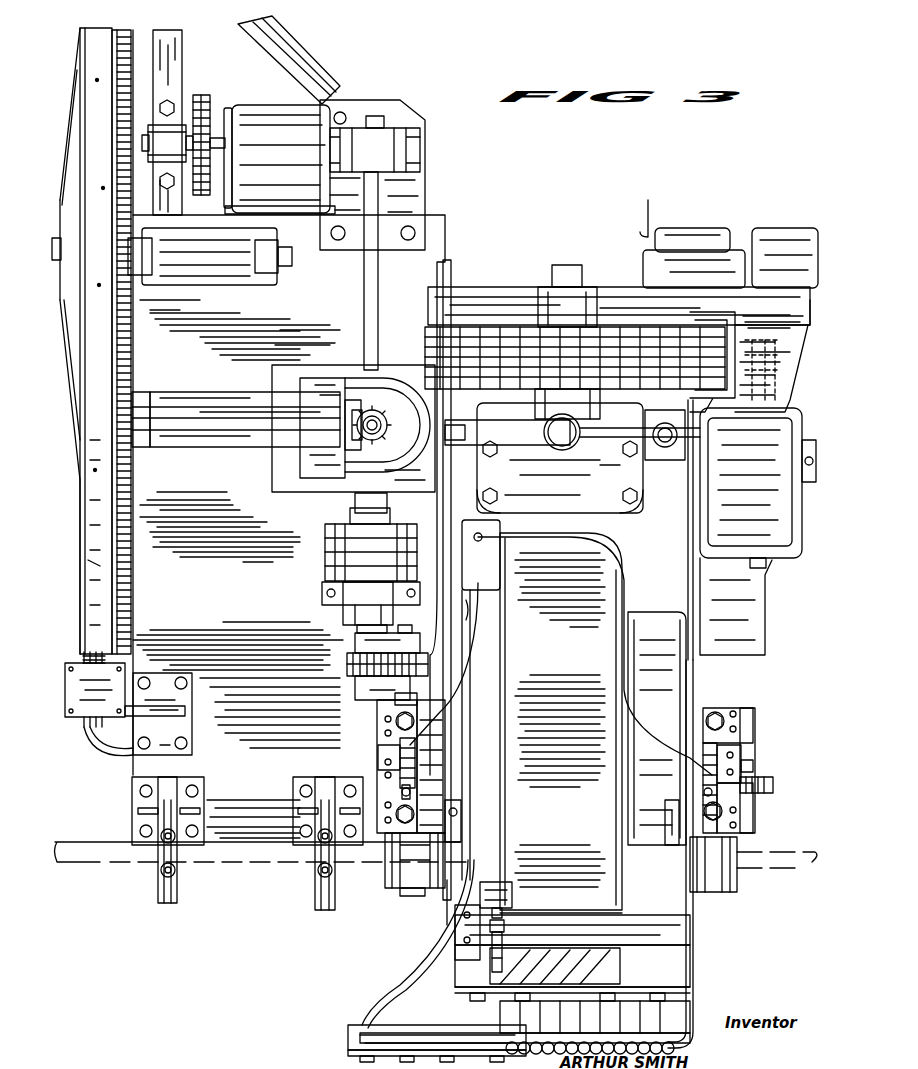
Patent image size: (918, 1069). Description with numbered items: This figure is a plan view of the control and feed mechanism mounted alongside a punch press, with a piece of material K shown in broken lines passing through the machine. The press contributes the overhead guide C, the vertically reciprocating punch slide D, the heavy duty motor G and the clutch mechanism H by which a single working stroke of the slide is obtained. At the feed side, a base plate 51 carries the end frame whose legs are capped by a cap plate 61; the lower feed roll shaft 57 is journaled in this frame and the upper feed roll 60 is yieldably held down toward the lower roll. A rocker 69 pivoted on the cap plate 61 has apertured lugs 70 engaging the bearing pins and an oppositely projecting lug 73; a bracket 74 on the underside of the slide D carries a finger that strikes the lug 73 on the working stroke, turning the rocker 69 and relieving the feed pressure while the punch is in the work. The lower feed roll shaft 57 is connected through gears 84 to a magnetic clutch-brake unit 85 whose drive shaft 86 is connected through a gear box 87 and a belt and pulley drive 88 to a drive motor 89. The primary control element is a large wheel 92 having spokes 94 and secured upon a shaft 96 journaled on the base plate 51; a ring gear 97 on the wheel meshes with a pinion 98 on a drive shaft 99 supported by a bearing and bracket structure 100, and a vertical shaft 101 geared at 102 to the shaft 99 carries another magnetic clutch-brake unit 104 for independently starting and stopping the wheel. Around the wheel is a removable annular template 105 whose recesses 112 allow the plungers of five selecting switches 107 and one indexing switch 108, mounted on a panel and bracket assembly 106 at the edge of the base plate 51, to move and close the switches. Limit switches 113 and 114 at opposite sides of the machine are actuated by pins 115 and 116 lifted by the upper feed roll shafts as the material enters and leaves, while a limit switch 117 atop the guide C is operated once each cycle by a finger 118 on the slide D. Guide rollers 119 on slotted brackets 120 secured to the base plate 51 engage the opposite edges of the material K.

The wheel 92 is at (112, 30).
The spokes 94 is at (68, 392).
The recesses 112 is at (92, 528).
The annular band or strip 105 is at (90, 564).
The selecting switches 107 is at (80, 655).
The indexing switch 108 is at (80, 661).
The supporting panel and bracket assembly 106 is at (68, 700).
The belt and pulley drive 88 is at (207, 100).
The drive motor 89 is at (263, 110).
The gear box 87 is at (386, 136).
The drive shaft 86 is at (364, 308).
The base plate 51 is at (289, 526).
The shaft 96 is at (210, 258).
The ring gear 97 is at (134, 362).
The pinion 98 is at (134, 392).
The bearing and bracket structure 100 is at (272, 392).
The drive shaft 99 is at (215, 432).
The gearing 102 is at (364, 392).
The magnetic clutch-brake unit 104 is at (406, 385).
The vertical shaft 101 is at (370, 428).
The magnetic clutch-brake unit 85 is at (318, 578).
The gears 84 is at (347, 668).
The lower feed roll shaft 57 is at (422, 715).
The cap plate 61 is at (377, 728).
The limit switch 113 is at (378, 754).
The pin 115 is at (405, 793).
The rocker 69 is at (435, 780).
The lug 73 is at (455, 805).
The bracket 74 is at (458, 848).
The upper feed roll 60 is at (402, 897).
The heavy duty motor G is at (788, 540).
The clutch mechanism H is at (549, 449).
The overhead guide C is at (640, 940).
The punch head or slide D is at (620, 964).
The limit switch 117 is at (512, 896).
The finger 118 is at (504, 955).
The apertured lugs 70 is at (715, 708).
The limit switch 114 is at (740, 762).
The pin 116 is at (752, 812).
The material K is at (96, 860).
The guide rollers 119 is at (180, 870).
The slotted brackets 120 is at (165, 905).